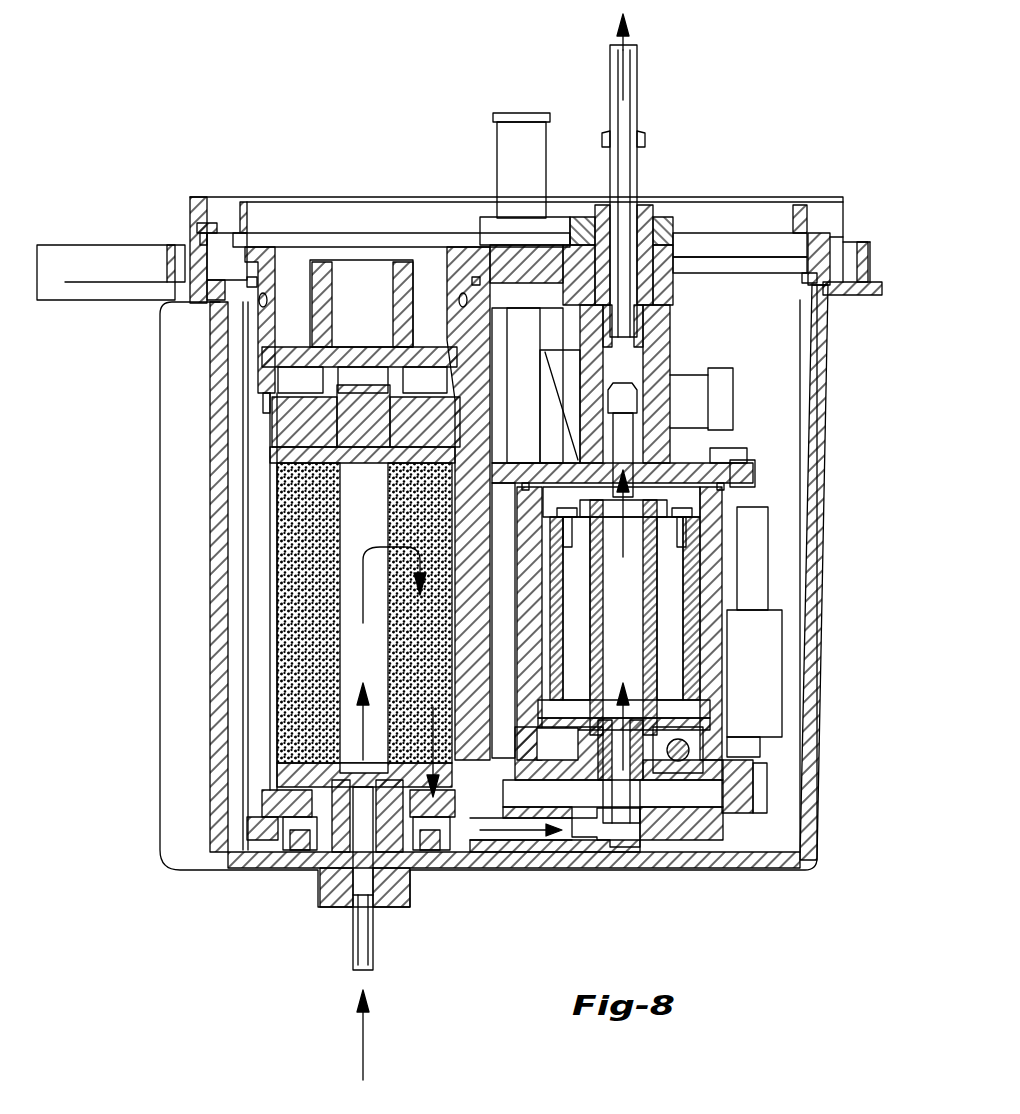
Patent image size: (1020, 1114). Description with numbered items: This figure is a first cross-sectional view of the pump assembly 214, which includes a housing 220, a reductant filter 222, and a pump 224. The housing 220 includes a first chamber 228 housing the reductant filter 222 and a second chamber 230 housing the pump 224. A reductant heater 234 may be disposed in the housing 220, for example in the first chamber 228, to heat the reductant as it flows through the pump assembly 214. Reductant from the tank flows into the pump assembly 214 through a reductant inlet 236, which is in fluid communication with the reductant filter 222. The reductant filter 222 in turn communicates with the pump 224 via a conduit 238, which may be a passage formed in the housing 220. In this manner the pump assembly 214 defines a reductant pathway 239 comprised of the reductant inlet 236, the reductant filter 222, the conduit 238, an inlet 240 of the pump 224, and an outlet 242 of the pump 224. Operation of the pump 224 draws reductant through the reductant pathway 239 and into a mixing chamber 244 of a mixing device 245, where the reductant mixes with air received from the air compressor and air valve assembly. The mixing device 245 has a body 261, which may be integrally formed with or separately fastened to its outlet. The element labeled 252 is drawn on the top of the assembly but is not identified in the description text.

The pump assembly 214 is at (305, 156).
The housing 220 is at (828, 440).
The reductant filter 222 is at (298, 525).
The pump 224 is at (706, 580).
The first chamber 228 is at (268, 628).
The second chamber 230 is at (687, 493).
The reductant heater 234 is at (255, 832).
The reductant inlet 236 is at (370, 878).
The conduit 238 is at (600, 818).
The reductant pathway 239 is at (513, 848).
The inlet of the pump 240 is at (625, 790).
The outlet of the pump 242 is at (624, 399).
The mixing chamber 244 is at (624, 365).
The mixing device 245 is at (645, 102).
The electrical connector 252 is at (523, 112).
The body 261 is at (657, 420).